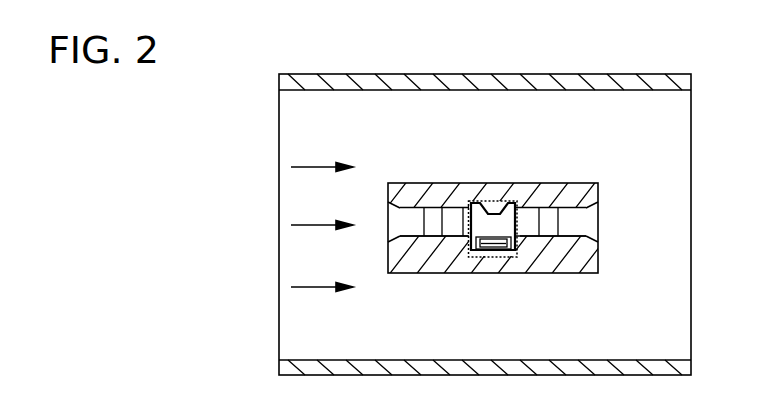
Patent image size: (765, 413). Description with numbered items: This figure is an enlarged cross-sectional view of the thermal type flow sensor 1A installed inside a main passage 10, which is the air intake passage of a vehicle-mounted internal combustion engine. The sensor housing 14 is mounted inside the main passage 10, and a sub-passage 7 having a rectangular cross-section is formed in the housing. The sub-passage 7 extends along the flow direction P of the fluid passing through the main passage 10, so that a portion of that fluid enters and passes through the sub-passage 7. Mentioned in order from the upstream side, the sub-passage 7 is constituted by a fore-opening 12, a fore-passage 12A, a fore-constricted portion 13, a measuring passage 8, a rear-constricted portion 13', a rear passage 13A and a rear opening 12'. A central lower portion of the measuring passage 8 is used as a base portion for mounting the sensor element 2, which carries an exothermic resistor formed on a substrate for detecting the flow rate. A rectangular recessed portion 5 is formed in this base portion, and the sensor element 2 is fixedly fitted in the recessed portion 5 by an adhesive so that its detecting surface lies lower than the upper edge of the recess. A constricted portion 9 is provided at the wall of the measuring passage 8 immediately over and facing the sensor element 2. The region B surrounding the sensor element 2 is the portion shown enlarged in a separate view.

The thermal type flow sensor 1A is at (636, 128).
The sensor element 2 is at (498, 250).
The recessed portion 5 is at (463, 252).
The sub-passage 7 is at (388, 210).
The measuring passage 8 is at (462, 207).
The constricted portion 9 is at (488, 208).
The main passage 10 is at (288, 122).
The fore-opening 12 is at (504, 230).
The rear opening 12' is at (634, 231).
The fore-passage 12A is at (418, 240).
The fore-constricted portion 13 is at (419, 190).
The rear passage 13A is at (580, 229).
The rear-constricted portion 13' is at (566, 272).
The sensor housing 14 is at (550, 183).
The region B is at (514, 201).
The flow direction P is at (307, 225).